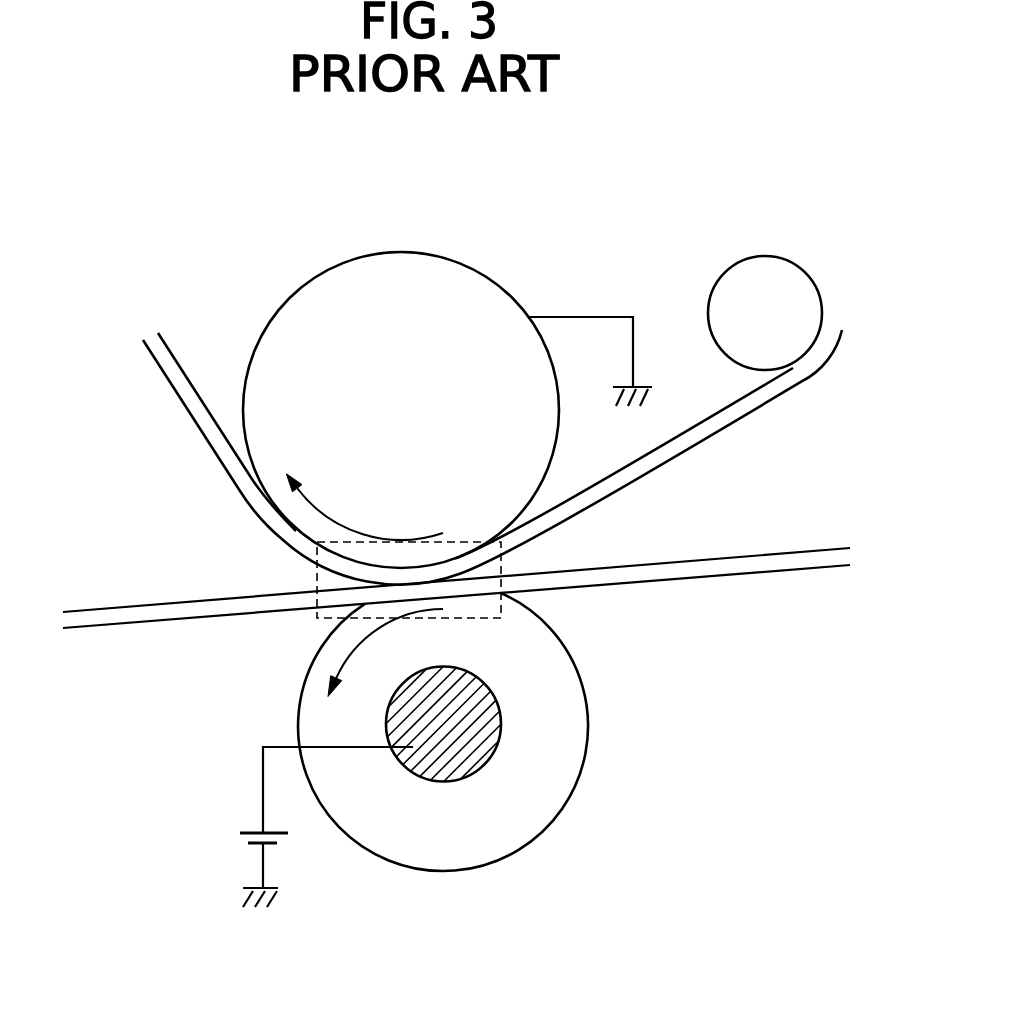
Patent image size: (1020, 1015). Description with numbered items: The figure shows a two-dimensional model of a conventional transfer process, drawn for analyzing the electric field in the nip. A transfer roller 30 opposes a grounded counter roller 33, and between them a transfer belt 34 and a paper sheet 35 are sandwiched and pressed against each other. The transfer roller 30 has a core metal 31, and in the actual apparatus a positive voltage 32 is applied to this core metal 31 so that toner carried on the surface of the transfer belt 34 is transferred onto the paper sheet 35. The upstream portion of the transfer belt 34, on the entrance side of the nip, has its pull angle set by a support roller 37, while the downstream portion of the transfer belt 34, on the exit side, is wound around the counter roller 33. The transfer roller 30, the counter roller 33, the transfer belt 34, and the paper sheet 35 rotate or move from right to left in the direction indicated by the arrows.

The transfer roller 30 is at (312, 708).
The core metal 31 is at (475, 732).
The voltage 32 is at (238, 842).
The counter roller 33 is at (332, 287).
The transfer belt 34 is at (702, 438).
The paper sheet 35 is at (708, 568).
The support roller 37 is at (785, 277).